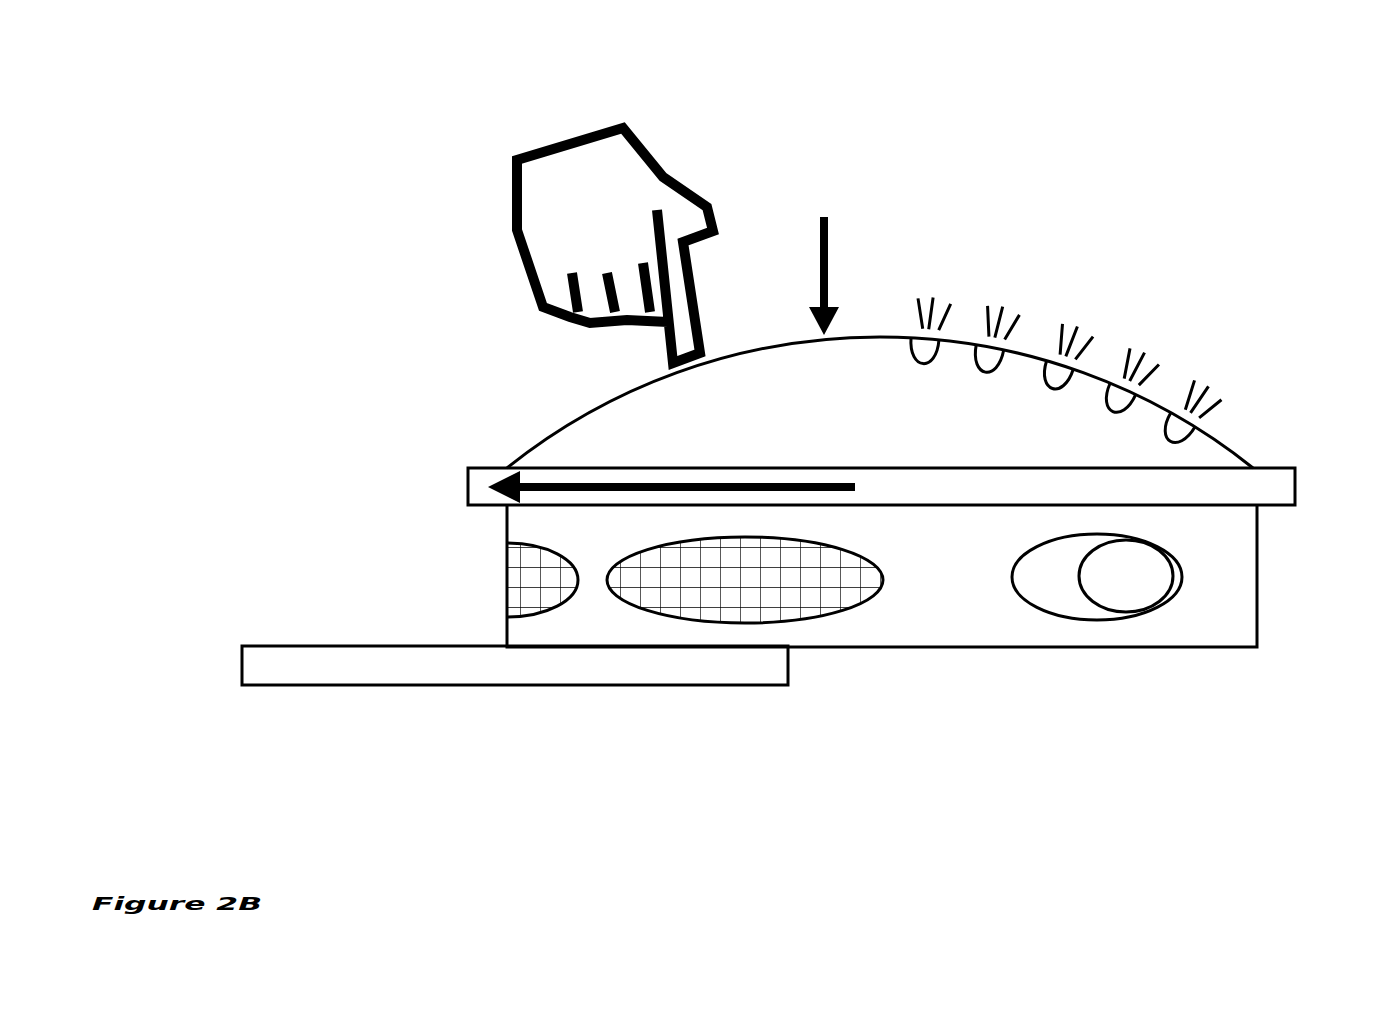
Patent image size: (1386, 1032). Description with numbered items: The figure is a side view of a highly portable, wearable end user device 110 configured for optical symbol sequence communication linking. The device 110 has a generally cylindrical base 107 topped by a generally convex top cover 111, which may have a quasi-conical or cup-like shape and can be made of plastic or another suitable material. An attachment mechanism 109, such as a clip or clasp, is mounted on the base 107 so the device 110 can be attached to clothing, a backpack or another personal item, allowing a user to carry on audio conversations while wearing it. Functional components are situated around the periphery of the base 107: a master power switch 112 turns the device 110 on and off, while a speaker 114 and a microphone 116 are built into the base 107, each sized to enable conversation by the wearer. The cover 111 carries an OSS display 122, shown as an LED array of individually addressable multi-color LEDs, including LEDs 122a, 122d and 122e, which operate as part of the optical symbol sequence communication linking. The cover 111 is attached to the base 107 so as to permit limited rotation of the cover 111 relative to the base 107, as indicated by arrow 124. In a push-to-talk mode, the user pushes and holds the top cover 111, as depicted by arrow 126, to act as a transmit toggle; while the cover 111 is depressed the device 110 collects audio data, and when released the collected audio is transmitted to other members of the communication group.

The end user device 110 is at (402, 188).
The top cover 111 is at (656, 377).
The base 107 is at (1257, 528).
The attachment mechanism 109 is at (487, 685).
The master power switch 112 is at (1078, 577).
The speaker 114 is at (835, 617).
The microphone 116 is at (568, 595).
The OSS display 122 is at (1105, 313).
The multi-color LED 122a is at (912, 347).
The multi-color LED 122d is at (1158, 398).
The multi-color LED 122e is at (1212, 446).
The arrow 124 is at (598, 487).
The arrow 126 is at (818, 260).